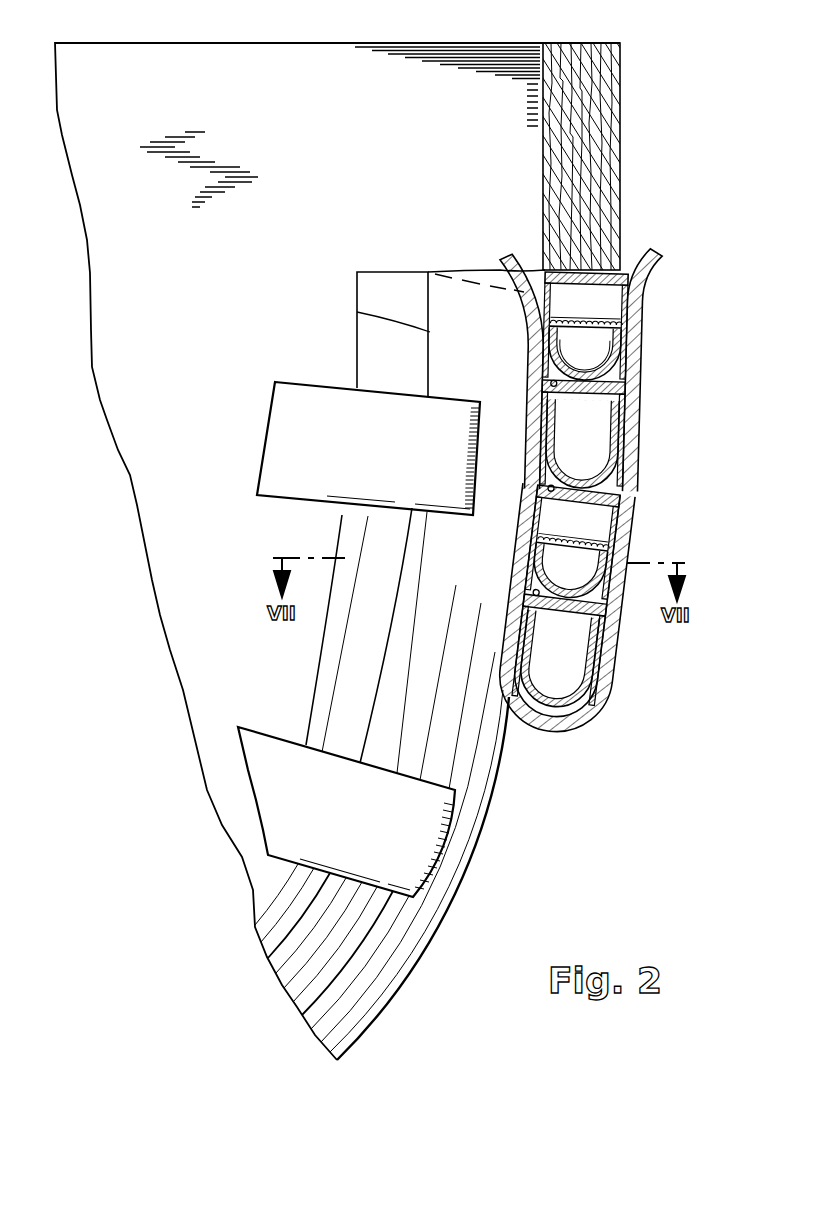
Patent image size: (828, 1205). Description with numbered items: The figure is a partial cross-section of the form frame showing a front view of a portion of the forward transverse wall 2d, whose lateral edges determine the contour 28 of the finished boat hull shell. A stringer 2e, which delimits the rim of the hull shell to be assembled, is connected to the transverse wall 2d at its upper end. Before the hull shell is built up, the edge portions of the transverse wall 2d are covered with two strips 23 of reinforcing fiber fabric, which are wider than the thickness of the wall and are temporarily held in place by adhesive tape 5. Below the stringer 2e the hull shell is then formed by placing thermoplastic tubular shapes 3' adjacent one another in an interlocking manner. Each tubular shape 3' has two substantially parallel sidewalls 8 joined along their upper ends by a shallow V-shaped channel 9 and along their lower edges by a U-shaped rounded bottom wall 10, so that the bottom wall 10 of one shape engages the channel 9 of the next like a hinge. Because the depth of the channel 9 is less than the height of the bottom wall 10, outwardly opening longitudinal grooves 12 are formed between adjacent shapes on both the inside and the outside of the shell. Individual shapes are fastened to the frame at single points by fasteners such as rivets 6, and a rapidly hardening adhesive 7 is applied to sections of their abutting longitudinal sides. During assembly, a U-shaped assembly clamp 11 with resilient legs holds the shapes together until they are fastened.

The transverse wall 2d is at (256, 58).
The stringer 2e is at (613, 70).
The V-shaped channel 9 is at (596, 268).
The sidewall 8 is at (606, 298).
The tubular shape 3' is at (597, 497).
The rivet 6 is at (607, 325).
The U-shaped rounded bottom wall 10 is at (552, 366).
The adhesive 7 is at (548, 380).
The longitudinal groove 12 is at (613, 380).
The assembly clamp 11 is at (618, 678).
The contour 28 is at (494, 792).
The strip 23 is at (368, 334).
The adhesive tape 5 is at (299, 400).